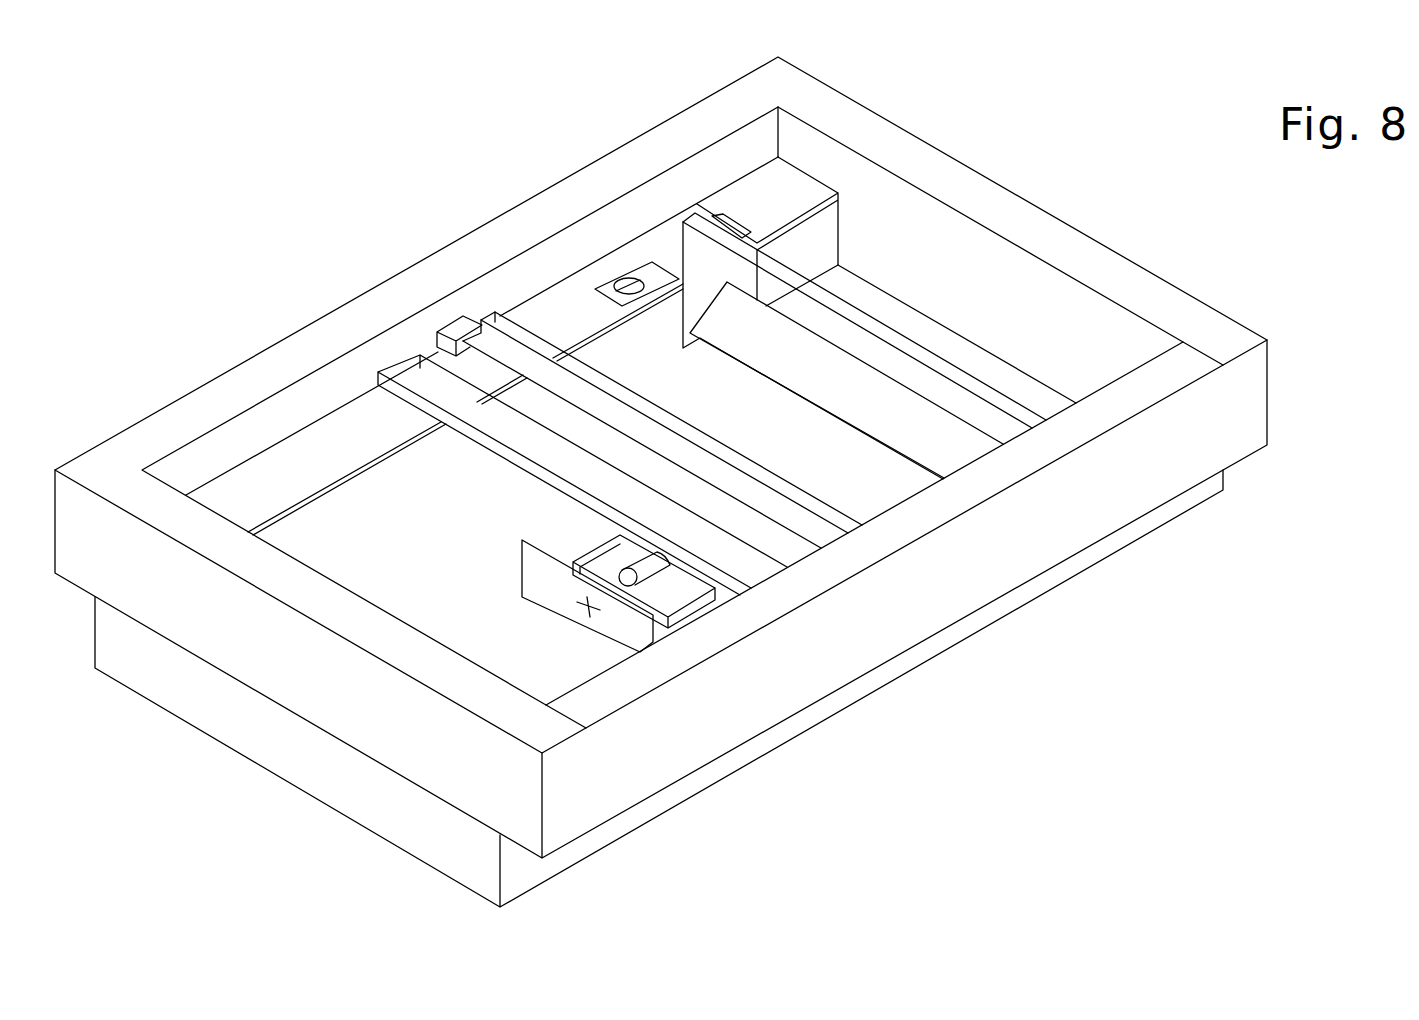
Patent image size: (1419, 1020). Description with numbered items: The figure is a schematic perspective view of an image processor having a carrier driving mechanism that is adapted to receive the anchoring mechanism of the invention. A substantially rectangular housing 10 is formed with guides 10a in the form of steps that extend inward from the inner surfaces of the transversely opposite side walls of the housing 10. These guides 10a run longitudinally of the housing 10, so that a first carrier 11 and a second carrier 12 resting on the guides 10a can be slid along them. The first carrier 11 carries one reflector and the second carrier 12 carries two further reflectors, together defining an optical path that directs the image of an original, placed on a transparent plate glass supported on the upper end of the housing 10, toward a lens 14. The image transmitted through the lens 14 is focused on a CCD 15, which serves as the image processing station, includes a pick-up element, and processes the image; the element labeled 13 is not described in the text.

The housing 10 is at (918, 125).
The guides 10a is at (340, 443).
The first carrier 11 is at (738, 560).
The second carrier 12 is at (1017, 413).
The guide rails 13 is at (650, 437).
The lens 14 is at (647, 570).
The CCD 15 is at (548, 550).